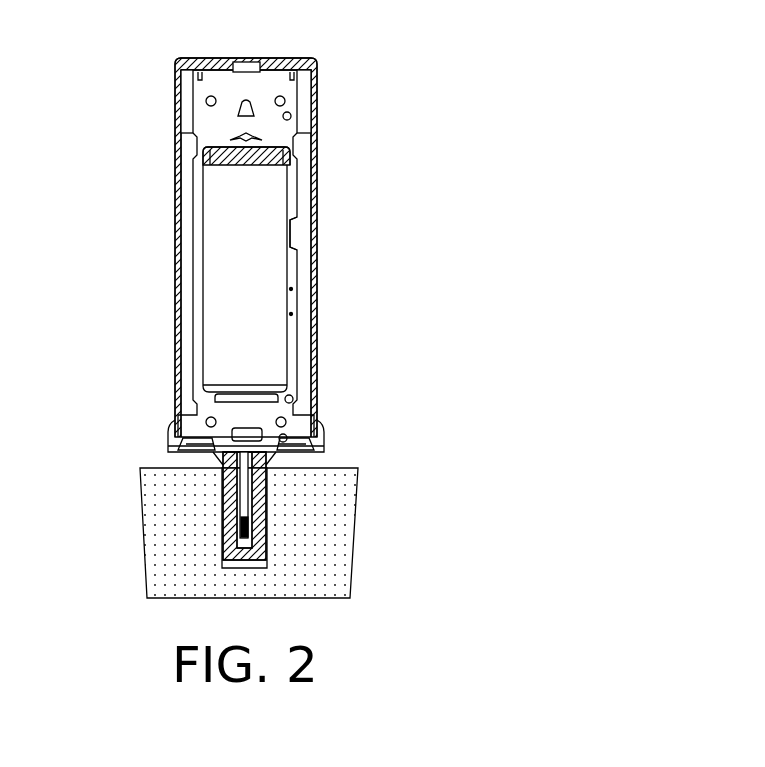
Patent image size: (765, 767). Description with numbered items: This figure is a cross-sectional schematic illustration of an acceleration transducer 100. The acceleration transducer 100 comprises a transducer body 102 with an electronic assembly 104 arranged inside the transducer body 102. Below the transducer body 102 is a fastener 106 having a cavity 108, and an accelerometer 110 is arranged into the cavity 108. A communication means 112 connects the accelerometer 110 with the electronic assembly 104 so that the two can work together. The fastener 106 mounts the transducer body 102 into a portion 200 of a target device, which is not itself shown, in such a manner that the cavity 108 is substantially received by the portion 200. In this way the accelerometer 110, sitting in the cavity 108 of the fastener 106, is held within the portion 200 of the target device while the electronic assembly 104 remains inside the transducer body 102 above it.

The acceleration transducer 100 is at (374, 60).
The transducer body 102 is at (318, 170).
The electronic assembly 104 is at (300, 236).
The fastener 106 is at (260, 522).
The cavity 108 is at (240, 485).
The accelerometer 110 is at (240, 530).
The communication means 112 is at (316, 447).
The portion of a target device 200 is at (336, 568).